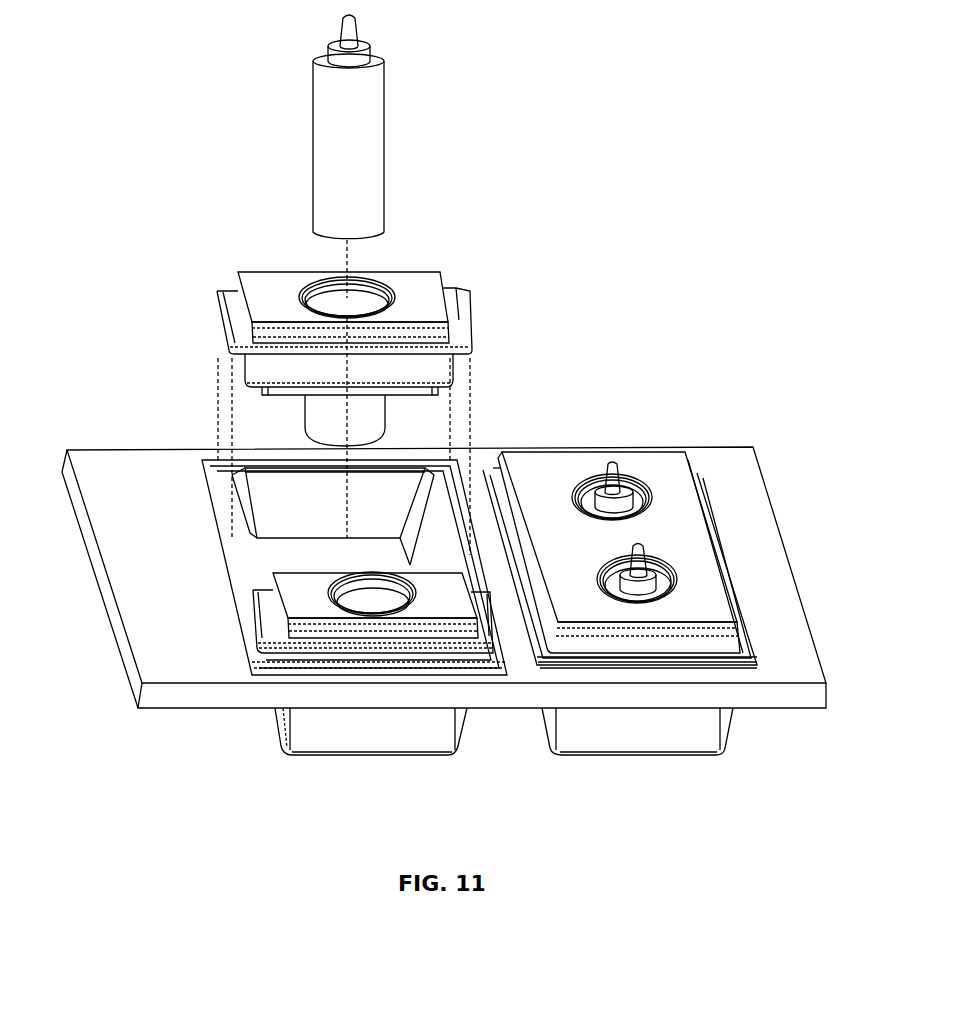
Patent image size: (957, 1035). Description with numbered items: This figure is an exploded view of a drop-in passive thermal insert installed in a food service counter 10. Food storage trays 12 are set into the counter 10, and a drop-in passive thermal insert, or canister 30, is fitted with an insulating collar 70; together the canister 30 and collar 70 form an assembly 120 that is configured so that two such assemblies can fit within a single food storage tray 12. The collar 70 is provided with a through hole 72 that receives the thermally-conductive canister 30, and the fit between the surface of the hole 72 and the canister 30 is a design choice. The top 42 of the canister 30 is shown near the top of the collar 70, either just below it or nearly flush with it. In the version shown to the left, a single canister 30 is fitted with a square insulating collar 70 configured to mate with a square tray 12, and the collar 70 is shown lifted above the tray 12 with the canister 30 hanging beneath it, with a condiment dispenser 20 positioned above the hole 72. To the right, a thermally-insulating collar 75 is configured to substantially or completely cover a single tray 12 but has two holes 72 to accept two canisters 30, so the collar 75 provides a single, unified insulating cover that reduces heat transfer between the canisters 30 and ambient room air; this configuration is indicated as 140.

The food service counter 10 is at (128, 476).
The food storage tray 12 is at (240, 556).
The bottle 20 is at (385, 128).
The canister 30 is at (347, 413).
The top 42 is at (318, 288).
The collar 70 is at (423, 271).
The through hole 72 is at (372, 290).
The thermally-insulating collar 75 is at (673, 528).
The assembly 120 is at (157, 294).
The assembly 140 is at (742, 289).